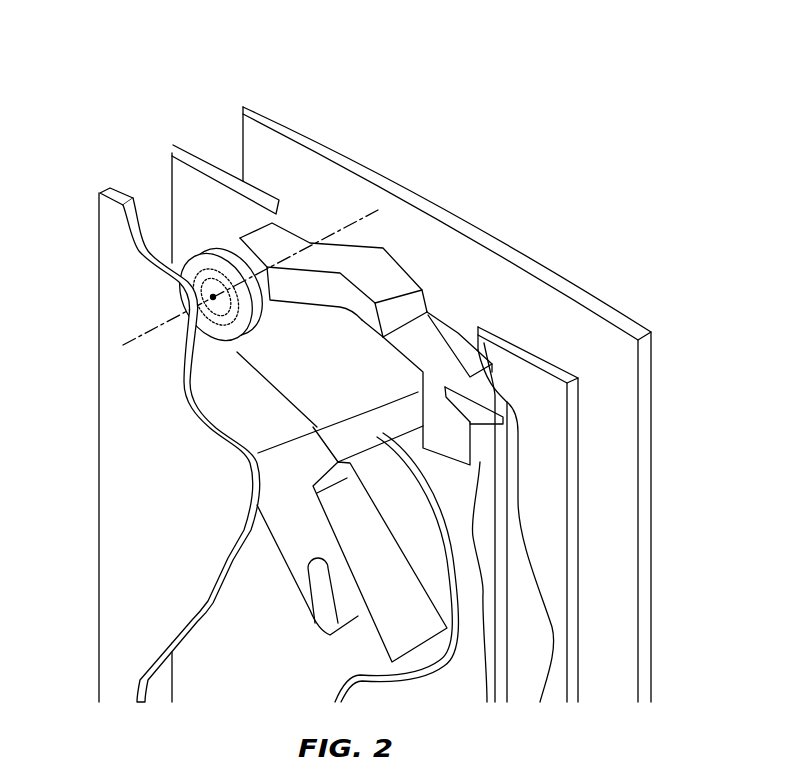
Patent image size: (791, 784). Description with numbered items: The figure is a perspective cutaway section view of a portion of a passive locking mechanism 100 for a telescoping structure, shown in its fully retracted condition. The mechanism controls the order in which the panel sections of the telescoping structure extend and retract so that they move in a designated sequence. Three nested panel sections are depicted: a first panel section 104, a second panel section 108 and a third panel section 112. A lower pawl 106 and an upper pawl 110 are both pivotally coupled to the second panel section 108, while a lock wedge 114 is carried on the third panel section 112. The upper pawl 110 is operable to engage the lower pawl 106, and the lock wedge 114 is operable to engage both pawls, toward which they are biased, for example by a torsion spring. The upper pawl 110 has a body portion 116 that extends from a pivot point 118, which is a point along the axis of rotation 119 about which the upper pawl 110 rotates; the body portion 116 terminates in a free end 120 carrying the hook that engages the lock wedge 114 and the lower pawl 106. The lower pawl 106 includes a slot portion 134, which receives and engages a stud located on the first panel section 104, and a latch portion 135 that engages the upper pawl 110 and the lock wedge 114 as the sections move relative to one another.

The passive locking mechanism 100 is at (566, 140).
The first panel section 104 is at (103, 188).
The lower pawl 106 is at (308, 577).
The second panel section 108 is at (178, 145).
The upper pawl 110 is at (350, 302).
The third panel section 112 is at (250, 105).
The lock wedge 114 is at (419, 479).
The body portion 116 is at (300, 307).
The pivot point 118 is at (217, 310).
The axis of rotation 119 is at (160, 327).
The free end 120 is at (357, 328).
The slot portion 134 is at (303, 600).
The latch portion 135 is at (397, 438).